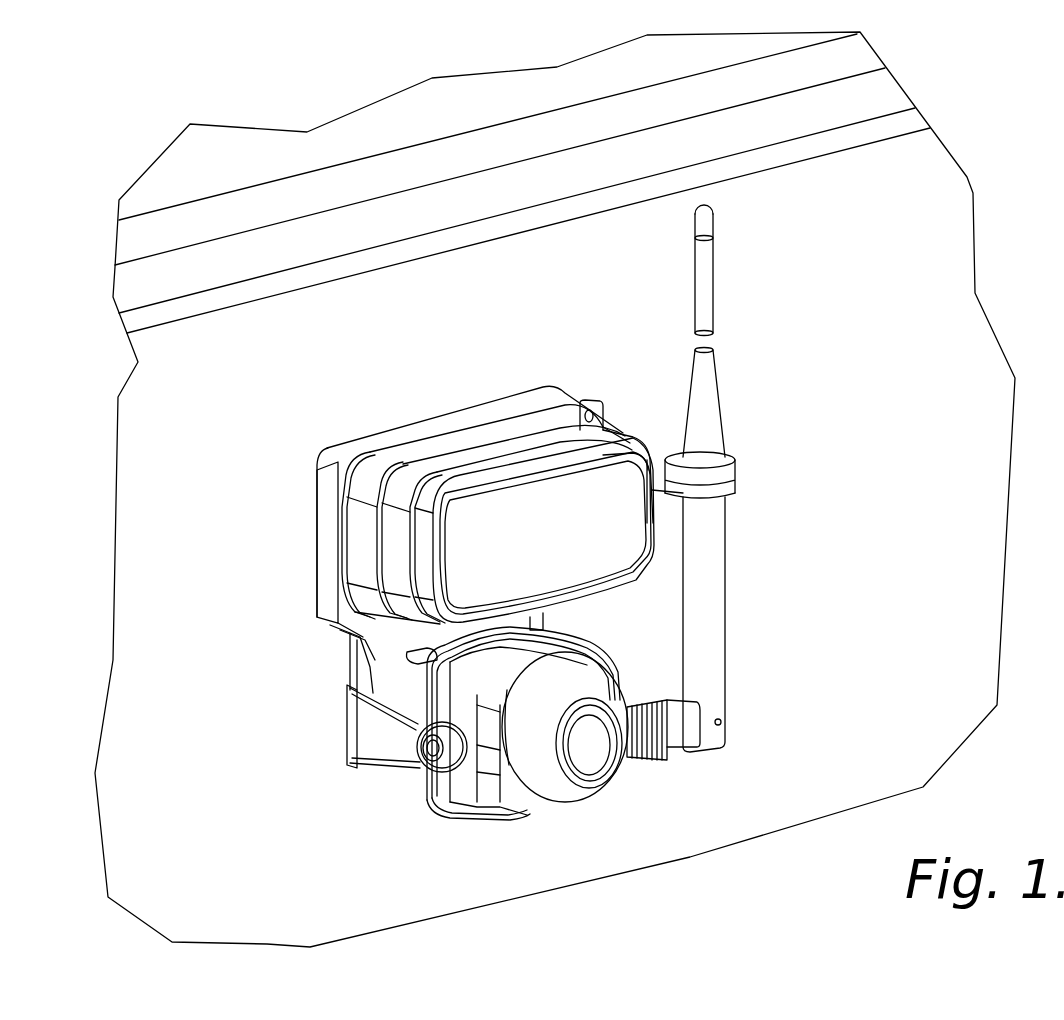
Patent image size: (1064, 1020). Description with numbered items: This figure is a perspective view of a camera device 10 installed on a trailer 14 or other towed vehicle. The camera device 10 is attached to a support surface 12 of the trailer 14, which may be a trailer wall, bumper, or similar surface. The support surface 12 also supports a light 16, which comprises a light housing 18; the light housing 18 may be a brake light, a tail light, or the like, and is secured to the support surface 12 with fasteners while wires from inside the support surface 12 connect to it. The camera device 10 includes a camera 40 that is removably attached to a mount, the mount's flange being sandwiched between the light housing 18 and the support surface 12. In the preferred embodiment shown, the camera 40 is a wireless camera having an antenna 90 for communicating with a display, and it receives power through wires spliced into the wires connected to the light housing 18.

The camera device 10 is at (287, 528).
The support surface 12 is at (836, 252).
The trailer 14 is at (885, 92).
The light 16 is at (470, 486).
The light housing 18 is at (400, 463).
The camera 40 is at (425, 808).
The antenna 90 is at (708, 423).